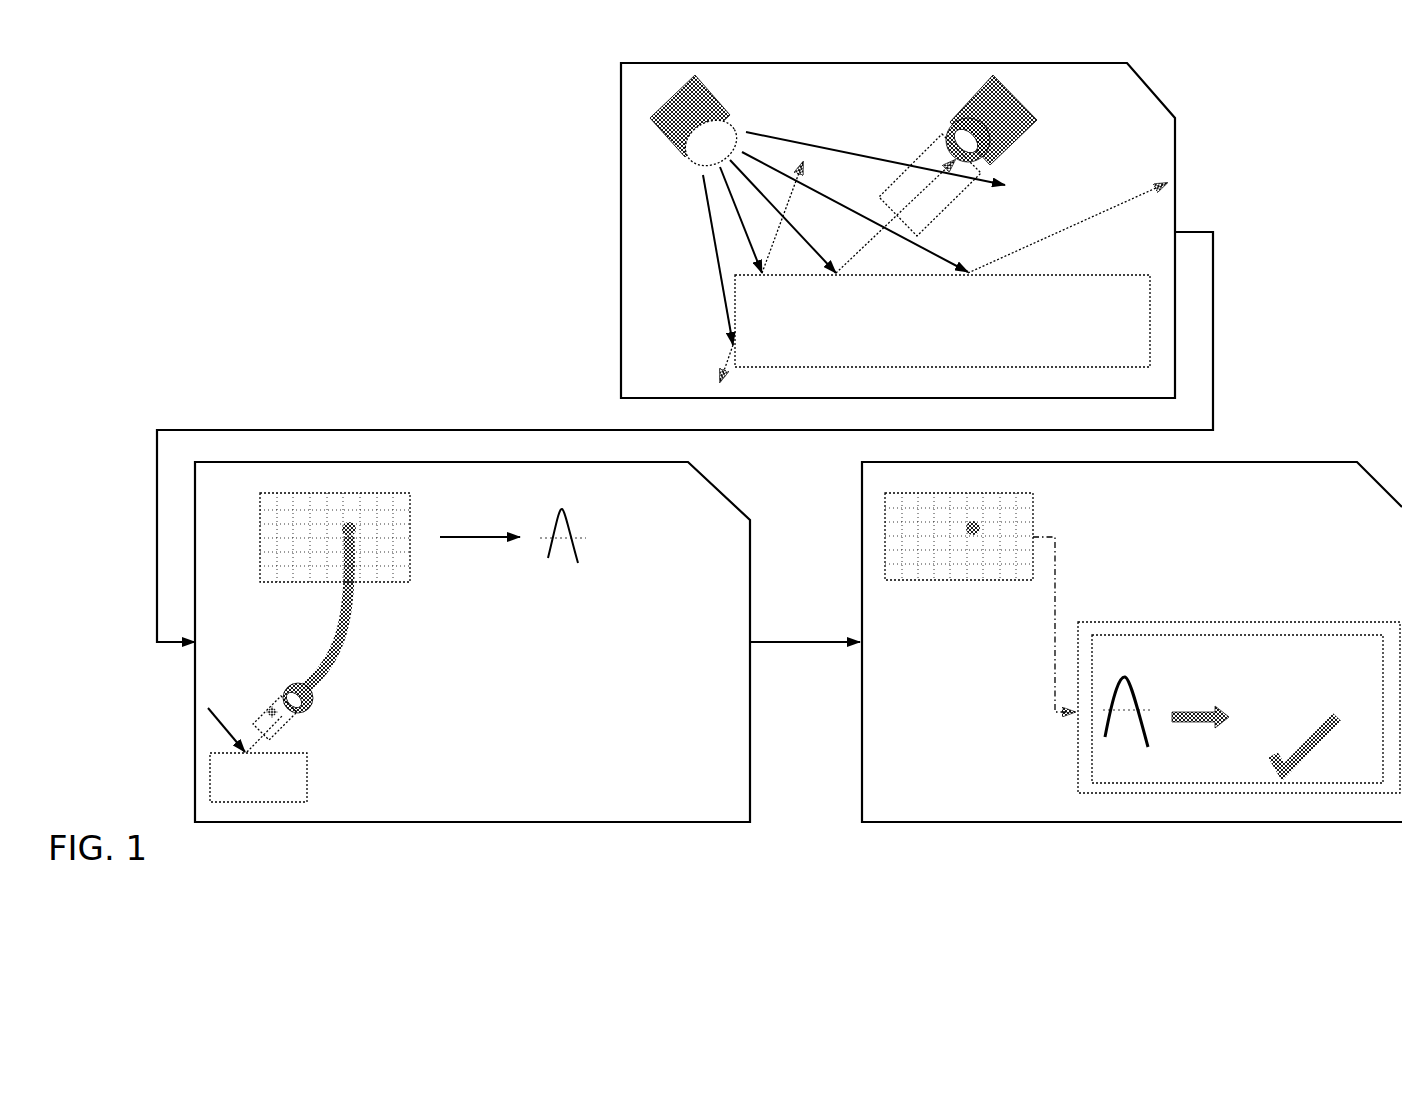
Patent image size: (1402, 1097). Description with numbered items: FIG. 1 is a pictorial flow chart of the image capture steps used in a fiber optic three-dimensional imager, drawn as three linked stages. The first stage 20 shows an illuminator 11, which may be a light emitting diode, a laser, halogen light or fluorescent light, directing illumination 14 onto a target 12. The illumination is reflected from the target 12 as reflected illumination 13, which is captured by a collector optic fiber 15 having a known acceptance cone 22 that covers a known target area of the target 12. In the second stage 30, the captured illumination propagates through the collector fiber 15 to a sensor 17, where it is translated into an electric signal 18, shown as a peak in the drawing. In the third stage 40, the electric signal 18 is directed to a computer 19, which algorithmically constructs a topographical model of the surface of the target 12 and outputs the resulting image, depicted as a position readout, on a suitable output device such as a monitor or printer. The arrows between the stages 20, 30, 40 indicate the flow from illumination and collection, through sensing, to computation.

The illuminator 11 is at (705, 86).
The target 12 is at (966, 332).
The reflected illumination 13 is at (787, 134).
The illumination 14 is at (870, 243).
The collector optic fiber 15 is at (1027, 127).
The sensor 17 is at (413, 495).
The electric signal 18 is at (856, 639).
The computer 19 is at (1322, 620).
The measurement setup 20 is at (1129, 125).
The acceptance cone 22 is at (930, 150).
The sensing stage 30 is at (702, 534).
The computing stage 40 is at (1353, 514).